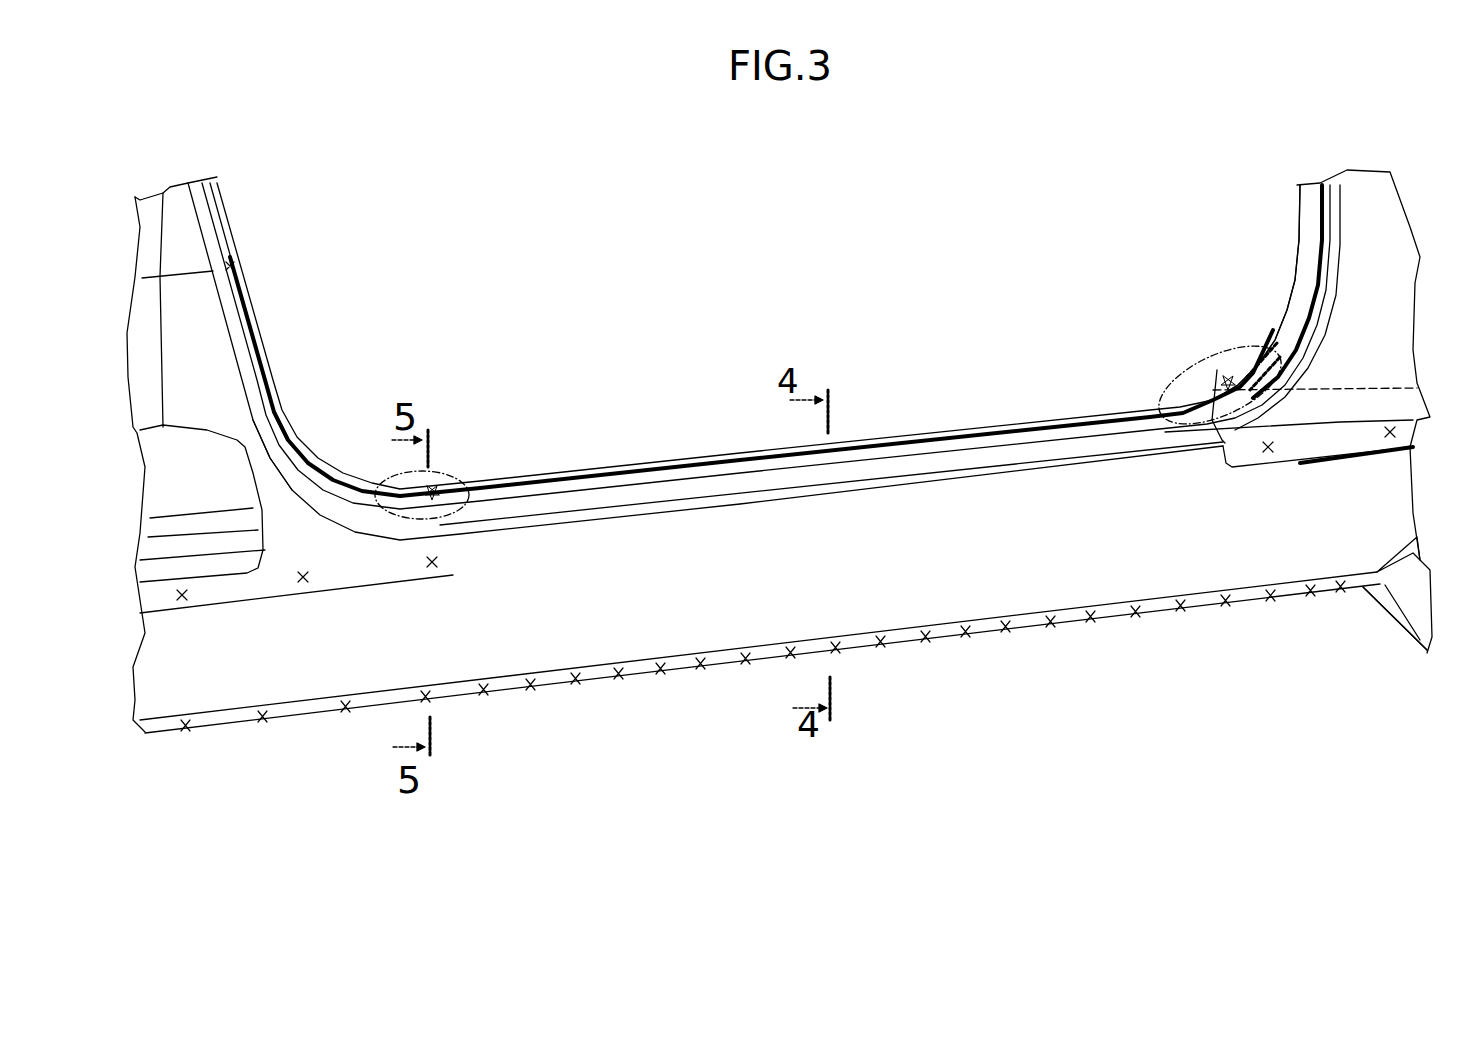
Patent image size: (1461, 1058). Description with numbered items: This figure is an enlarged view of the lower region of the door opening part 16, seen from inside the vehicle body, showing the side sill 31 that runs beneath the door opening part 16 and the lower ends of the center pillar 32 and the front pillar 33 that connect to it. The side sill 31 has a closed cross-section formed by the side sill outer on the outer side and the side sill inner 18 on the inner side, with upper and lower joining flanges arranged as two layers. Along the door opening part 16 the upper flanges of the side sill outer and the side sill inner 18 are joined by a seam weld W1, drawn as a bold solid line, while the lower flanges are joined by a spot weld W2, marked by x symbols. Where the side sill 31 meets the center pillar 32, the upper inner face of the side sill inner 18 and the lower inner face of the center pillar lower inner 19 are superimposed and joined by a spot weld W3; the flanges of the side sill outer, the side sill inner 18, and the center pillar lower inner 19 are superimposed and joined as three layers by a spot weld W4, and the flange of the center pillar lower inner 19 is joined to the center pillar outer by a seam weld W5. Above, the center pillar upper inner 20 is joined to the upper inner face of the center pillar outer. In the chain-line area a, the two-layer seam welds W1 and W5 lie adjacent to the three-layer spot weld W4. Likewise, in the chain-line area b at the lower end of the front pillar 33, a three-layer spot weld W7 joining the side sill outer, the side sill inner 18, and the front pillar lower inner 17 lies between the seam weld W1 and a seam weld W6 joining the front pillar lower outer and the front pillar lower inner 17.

The door opening part 16 is at (754, 175).
The front pillar lower inner 17 is at (1285, 292).
The side sill inner 18 is at (783, 635).
The center pillar lower inner 19 is at (680, 339).
The center pillar upper inner 20 is at (290, 448).
The side sill 31 is at (1008, 638).
The center pillar 32 is at (263, 290).
The front pillar 33 is at (1293, 212).
The seam weld W1 is at (836, 413).
The spot weld W2 is at (763, 671).
The spot weld W3 is at (326, 609).
The spot weld W4 is at (467, 451).
The seam weld W5 is at (296, 436).
The seam weld W6 is at (1283, 276).
The spot weld W7 is at (1211, 345).
The area a is at (429, 473).
The area b is at (1203, 385).